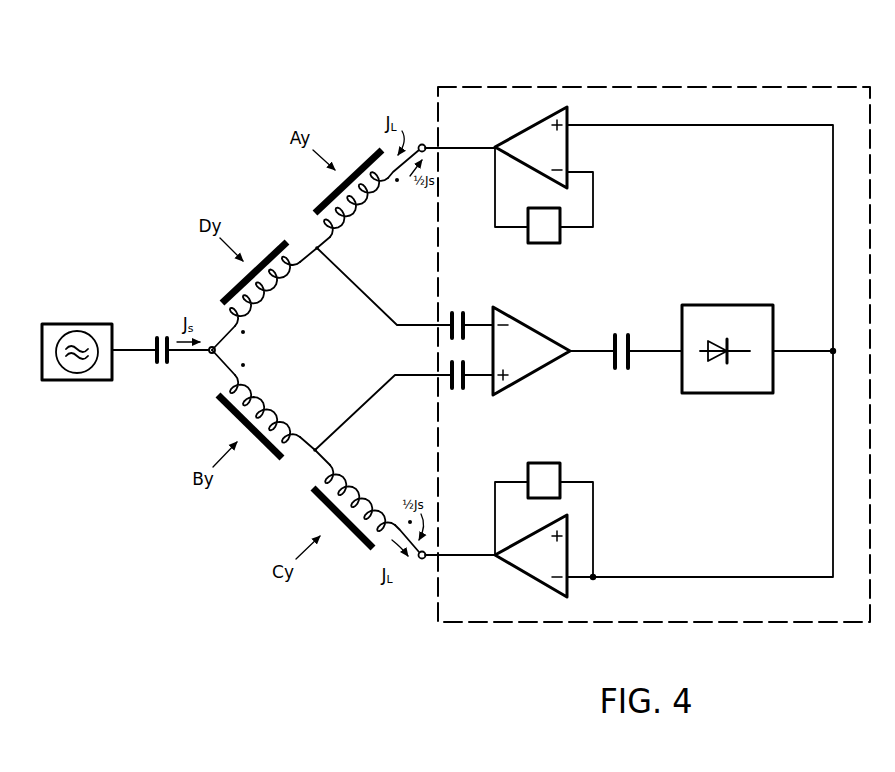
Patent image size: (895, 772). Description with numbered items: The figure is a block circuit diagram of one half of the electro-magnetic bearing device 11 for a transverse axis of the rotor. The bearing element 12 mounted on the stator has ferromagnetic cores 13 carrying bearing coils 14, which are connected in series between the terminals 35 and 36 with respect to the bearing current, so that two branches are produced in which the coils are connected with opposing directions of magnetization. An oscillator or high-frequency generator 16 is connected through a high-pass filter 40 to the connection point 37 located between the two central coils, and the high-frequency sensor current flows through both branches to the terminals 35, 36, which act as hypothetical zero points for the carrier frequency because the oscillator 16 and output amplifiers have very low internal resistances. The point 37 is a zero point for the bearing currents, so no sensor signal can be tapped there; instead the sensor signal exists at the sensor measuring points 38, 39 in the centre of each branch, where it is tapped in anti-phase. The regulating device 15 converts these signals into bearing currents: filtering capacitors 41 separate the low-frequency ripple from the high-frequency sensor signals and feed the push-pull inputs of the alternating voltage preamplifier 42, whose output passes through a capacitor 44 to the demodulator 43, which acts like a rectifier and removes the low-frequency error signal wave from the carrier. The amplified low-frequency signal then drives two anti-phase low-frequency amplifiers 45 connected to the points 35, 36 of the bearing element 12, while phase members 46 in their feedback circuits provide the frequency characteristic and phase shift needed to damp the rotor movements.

The bearing device 11 is at (654, 315).
The bearing element 12 is at (273, 199).
The cores 13 is at (361, 165).
The bearing coils 14 is at (390, 190).
The regulating device 15 is at (641, 86).
The oscillator 16 is at (80, 380).
The terminal 35 is at (423, 144).
The terminal 36 is at (422, 559).
The connection point 37 is at (207, 356).
The sensor measuring point 38 is at (321, 248).
The sensor measuring point 39 is at (316, 445).
The filter 40 is at (162, 365).
The filtering capacitors 41 is at (458, 311).
The alternating voltage preamplifier 42 is at (530, 338).
The demodulator 43 is at (725, 396).
The capacitor 44 is at (621, 372).
The low-frequency amplifiers 45 is at (570, 147).
The phase members 46 is at (546, 240).